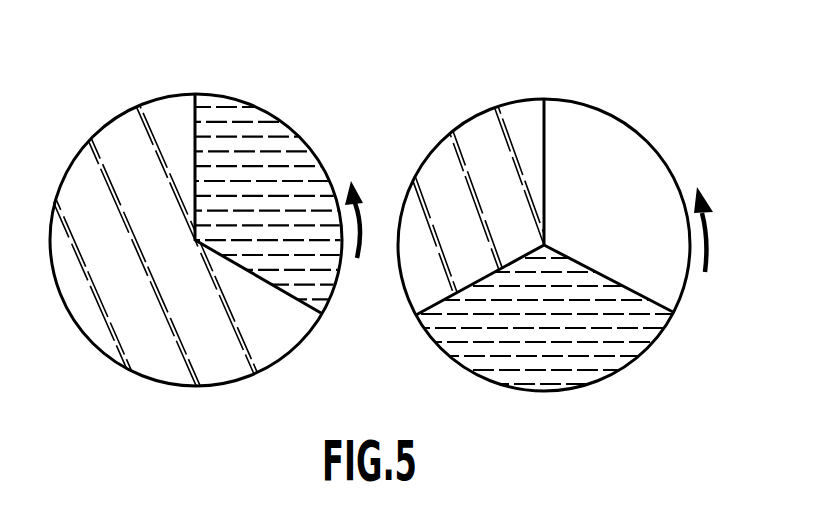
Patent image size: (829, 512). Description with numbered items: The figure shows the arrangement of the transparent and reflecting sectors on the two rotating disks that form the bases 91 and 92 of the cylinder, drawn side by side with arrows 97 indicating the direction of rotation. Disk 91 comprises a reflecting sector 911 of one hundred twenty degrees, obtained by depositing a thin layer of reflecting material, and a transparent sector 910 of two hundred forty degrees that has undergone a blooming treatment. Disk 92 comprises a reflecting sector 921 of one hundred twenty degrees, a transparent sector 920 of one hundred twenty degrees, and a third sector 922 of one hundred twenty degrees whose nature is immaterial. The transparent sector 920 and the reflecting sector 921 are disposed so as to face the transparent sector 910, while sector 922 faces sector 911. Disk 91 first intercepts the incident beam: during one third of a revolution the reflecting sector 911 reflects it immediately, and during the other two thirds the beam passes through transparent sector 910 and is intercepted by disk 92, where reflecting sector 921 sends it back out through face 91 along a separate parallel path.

The base 91 is at (230, 384).
The transparent sector 910 is at (121, 154).
The reflecting sector 911 is at (253, 142).
The base 92 is at (623, 360).
The transparent sector 920 is at (475, 142).
The reflecting sector 921 is at (497, 338).
The sector 922 is at (648, 190).
The arrows 97 is at (362, 241).